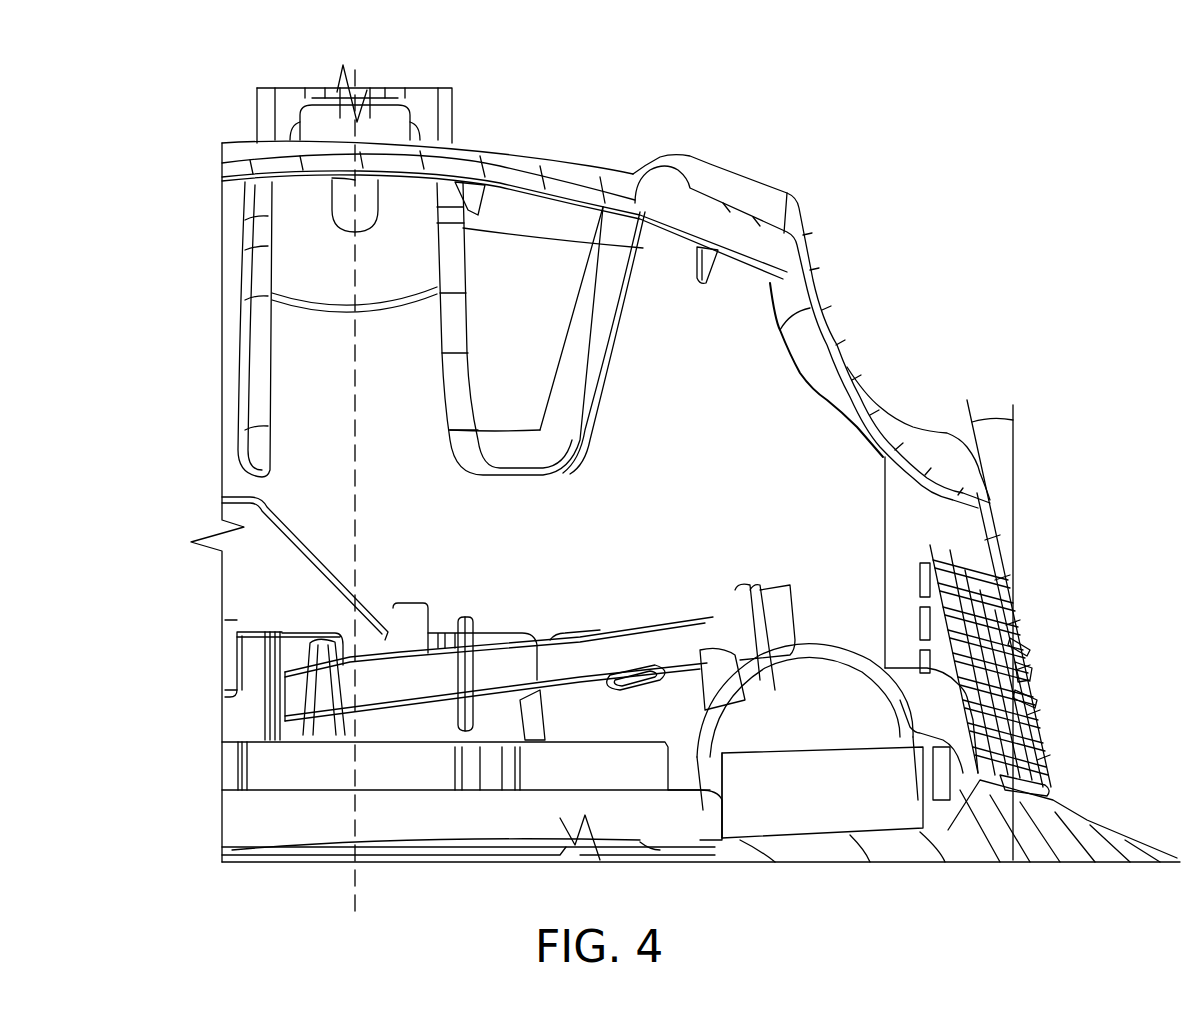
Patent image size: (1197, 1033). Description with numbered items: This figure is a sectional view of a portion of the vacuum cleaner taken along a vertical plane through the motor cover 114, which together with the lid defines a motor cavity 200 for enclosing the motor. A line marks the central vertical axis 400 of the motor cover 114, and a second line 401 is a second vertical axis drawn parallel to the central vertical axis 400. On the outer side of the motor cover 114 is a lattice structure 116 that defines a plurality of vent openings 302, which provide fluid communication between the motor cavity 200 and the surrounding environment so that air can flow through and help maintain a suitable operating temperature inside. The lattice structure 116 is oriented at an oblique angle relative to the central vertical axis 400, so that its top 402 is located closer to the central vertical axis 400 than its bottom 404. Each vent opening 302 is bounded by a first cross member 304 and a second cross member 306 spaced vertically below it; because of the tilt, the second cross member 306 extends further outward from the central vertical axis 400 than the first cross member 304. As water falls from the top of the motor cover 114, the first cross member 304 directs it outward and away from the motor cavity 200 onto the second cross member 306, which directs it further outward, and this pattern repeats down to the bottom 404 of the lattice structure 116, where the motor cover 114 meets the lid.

The motor cover 114 is at (735, 168).
The motor cavity 200 is at (712, 492).
The central vertical axis 400 is at (345, 880).
The second vertical axis 401 is at (1014, 462).
The top of the lattice structure 402 is at (1030, 630).
The first cross member 304 is at (1030, 650).
The vent opening 302 is at (1035, 664).
The second cross member 306 is at (1040, 692).
The lattice structure 116 is at (1050, 725).
The bottom of the lattice structure 404 is at (1065, 790).